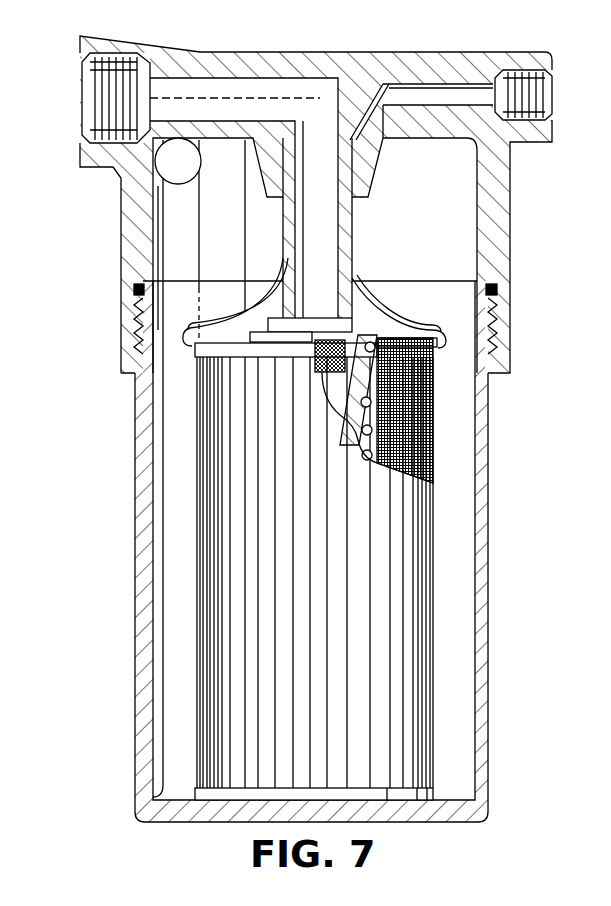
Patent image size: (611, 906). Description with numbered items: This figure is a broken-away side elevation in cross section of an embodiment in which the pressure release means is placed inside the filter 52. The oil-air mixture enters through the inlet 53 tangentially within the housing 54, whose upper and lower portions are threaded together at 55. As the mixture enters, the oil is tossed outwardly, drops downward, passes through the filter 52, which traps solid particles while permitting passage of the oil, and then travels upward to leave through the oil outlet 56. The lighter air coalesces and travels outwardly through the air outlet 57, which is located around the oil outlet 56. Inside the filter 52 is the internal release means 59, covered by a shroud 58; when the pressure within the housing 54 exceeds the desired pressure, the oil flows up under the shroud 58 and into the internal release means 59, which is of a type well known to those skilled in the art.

The filter 52 is at (417, 577).
The inlet 53 is at (186, 172).
The housing 54 is at (508, 298).
The threaded connection 55 is at (492, 330).
The oil outlet 56 is at (167, 110).
The air outlet 57 is at (478, 97).
The shroud 58 is at (240, 317).
The internal release means 59 is at (362, 297).